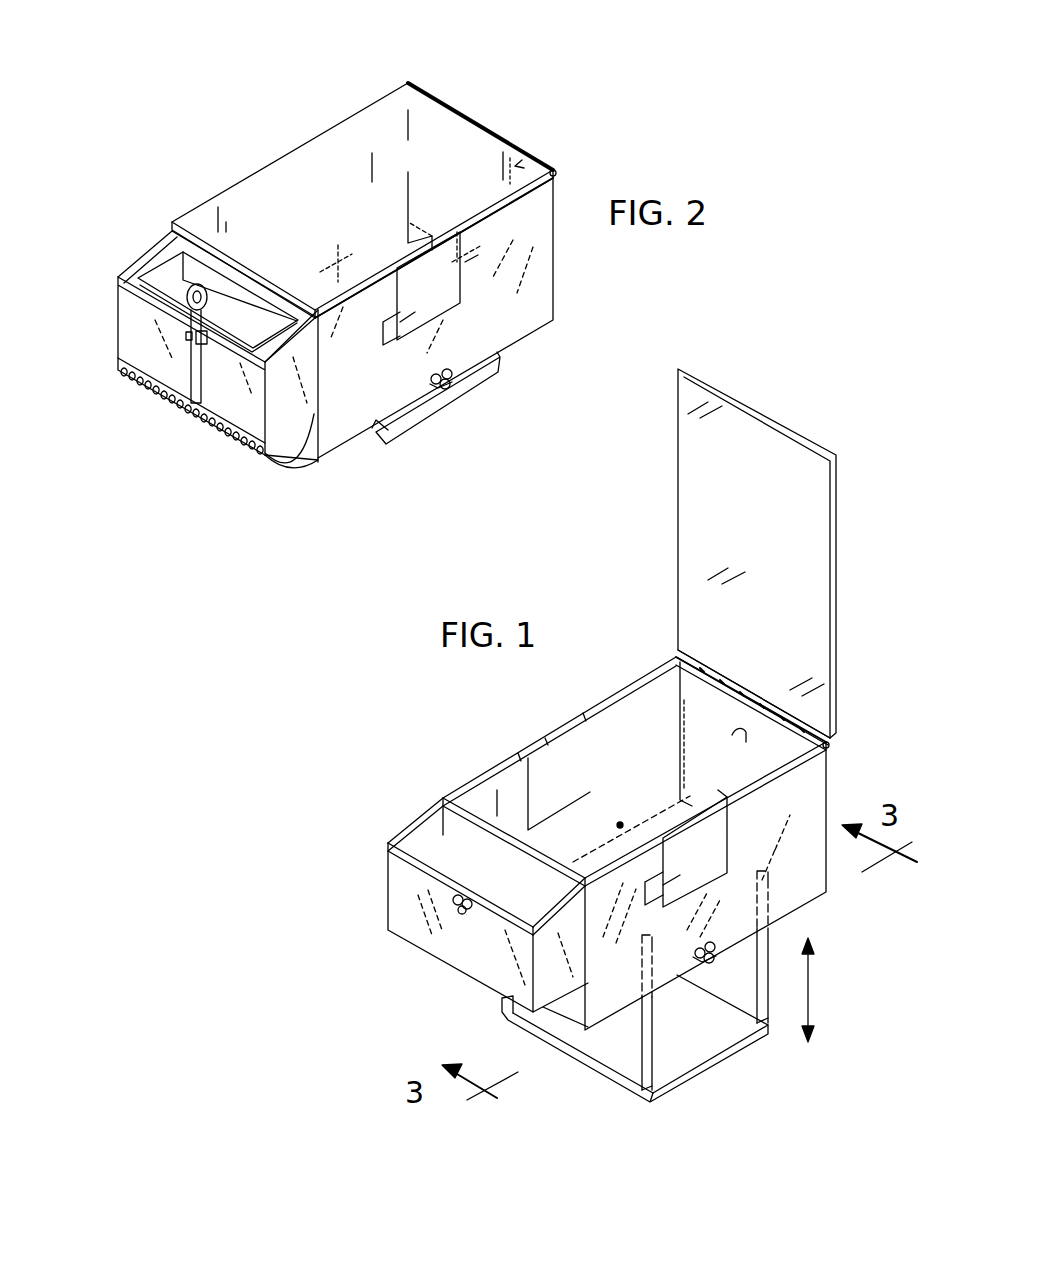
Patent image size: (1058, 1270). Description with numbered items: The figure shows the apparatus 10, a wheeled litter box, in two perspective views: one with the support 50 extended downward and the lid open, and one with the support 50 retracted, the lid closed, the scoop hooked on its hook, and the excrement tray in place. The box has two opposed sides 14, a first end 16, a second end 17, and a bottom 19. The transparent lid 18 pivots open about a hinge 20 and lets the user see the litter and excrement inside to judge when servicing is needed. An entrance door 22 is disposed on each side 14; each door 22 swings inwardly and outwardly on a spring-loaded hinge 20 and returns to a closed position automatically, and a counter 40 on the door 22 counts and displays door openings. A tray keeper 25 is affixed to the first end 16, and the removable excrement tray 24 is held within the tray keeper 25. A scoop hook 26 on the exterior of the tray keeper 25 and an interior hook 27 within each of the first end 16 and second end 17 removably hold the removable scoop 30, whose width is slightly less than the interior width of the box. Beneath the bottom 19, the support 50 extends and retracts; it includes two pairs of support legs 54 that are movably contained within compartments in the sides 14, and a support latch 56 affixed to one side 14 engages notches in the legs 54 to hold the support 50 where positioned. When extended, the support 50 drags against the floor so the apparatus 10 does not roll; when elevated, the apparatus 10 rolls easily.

In FIG. 2, the apparatus 10 is at (527, 100).
In FIG. 1, the apparatus 10 is at (812, 360).
In FIG. 2, the side 14 is at (548, 298).
In FIG. 1, the side 14 is at (818, 792).
In FIG. 2, the first end 16 is at (310, 456).
In FIG. 1, the first end 16 is at (566, 1012).
In FIG. 2, the second end 17 is at (535, 163).
In FIG. 1, the second end 17 is at (670, 660).
In FIG. 2, the transparent lid 18 is at (312, 160).
In FIG. 1, the transparent lid 18 is at (836, 598).
In FIG. 2, the bottom 19 is at (410, 243).
In FIG. 1, the bottom 19 is at (657, 818).
In FIG. 2, the hinge 20 is at (558, 172).
In FIG. 1, the hinge 20 is at (834, 742).
In FIG. 2, the entrance door 22 is at (472, 258).
In FIG. 1, the entrance door 22 is at (546, 738).
In FIG. 2, the removable excrement tray 24 is at (157, 262).
In FIG. 2, the tray keeper 25 is at (118, 300).
In FIG. 1, the tray keeper 25 is at (396, 886).
In FIG. 2, the scoop hook 26 is at (205, 338).
In FIG. 1, the scoop hook 26 is at (460, 907).
In FIG. 1, the interior hook 27 is at (738, 732).
In FIG. 2, the removable scoop 30 is at (183, 434).
In FIG. 2, the counter 40 is at (421, 288).
In FIG. 1, the counter 40 is at (686, 848).
In FIG. 2, the support 50 is at (468, 400).
In FIG. 1, the support 50 is at (752, 1080).
In FIG. 1, the support leg 54 is at (656, 1031).
In FIG. 2, the support latch 56 is at (455, 355).
In FIG. 1, the support latch 56 is at (722, 964).